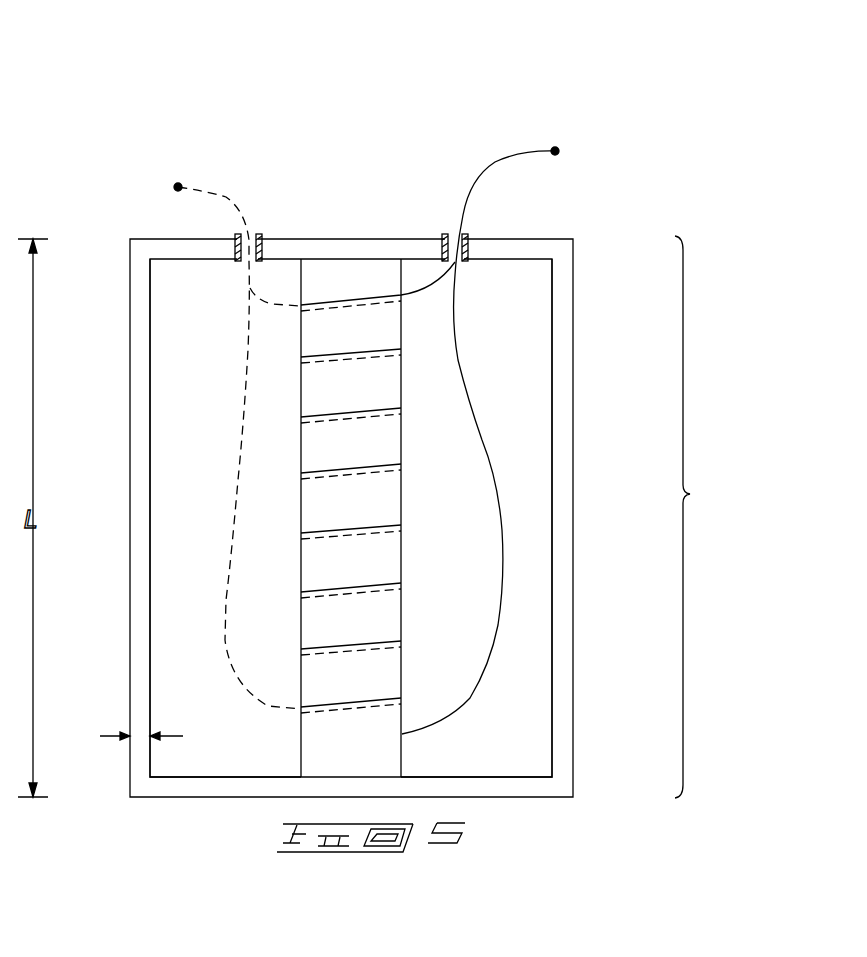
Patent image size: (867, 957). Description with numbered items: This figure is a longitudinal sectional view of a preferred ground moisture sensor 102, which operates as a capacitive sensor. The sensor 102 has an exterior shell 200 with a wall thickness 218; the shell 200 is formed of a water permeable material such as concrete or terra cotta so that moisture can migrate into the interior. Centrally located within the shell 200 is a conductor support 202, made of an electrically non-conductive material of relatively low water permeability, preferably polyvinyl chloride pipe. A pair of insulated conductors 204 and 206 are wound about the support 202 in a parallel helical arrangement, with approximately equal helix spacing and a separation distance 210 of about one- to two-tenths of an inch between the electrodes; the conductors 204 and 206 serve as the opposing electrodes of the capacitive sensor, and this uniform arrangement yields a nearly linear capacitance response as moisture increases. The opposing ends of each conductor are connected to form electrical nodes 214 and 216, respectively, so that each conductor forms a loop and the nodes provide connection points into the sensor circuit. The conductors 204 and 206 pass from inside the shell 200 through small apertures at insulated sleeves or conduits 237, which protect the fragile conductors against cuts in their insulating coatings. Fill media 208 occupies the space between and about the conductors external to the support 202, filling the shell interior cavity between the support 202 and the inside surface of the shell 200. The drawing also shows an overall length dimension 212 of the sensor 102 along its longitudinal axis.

The sensor 102 is at (497, 90).
The exterior shell 200 is at (573, 288).
The conductor support 202 is at (330, 274).
The conductor 204 is at (473, 192).
The conductor 206 is at (226, 197).
The fill media 208 is at (512, 396).
The separation distance 210 is at (406, 514).
The housing height 212 is at (709, 517).
The electrical node 214 is at (559, 153).
The electrical node 216 is at (178, 183).
The wall thickness 218 is at (138, 732).
The insulated sleeves or conduits 237 is at (258, 236).